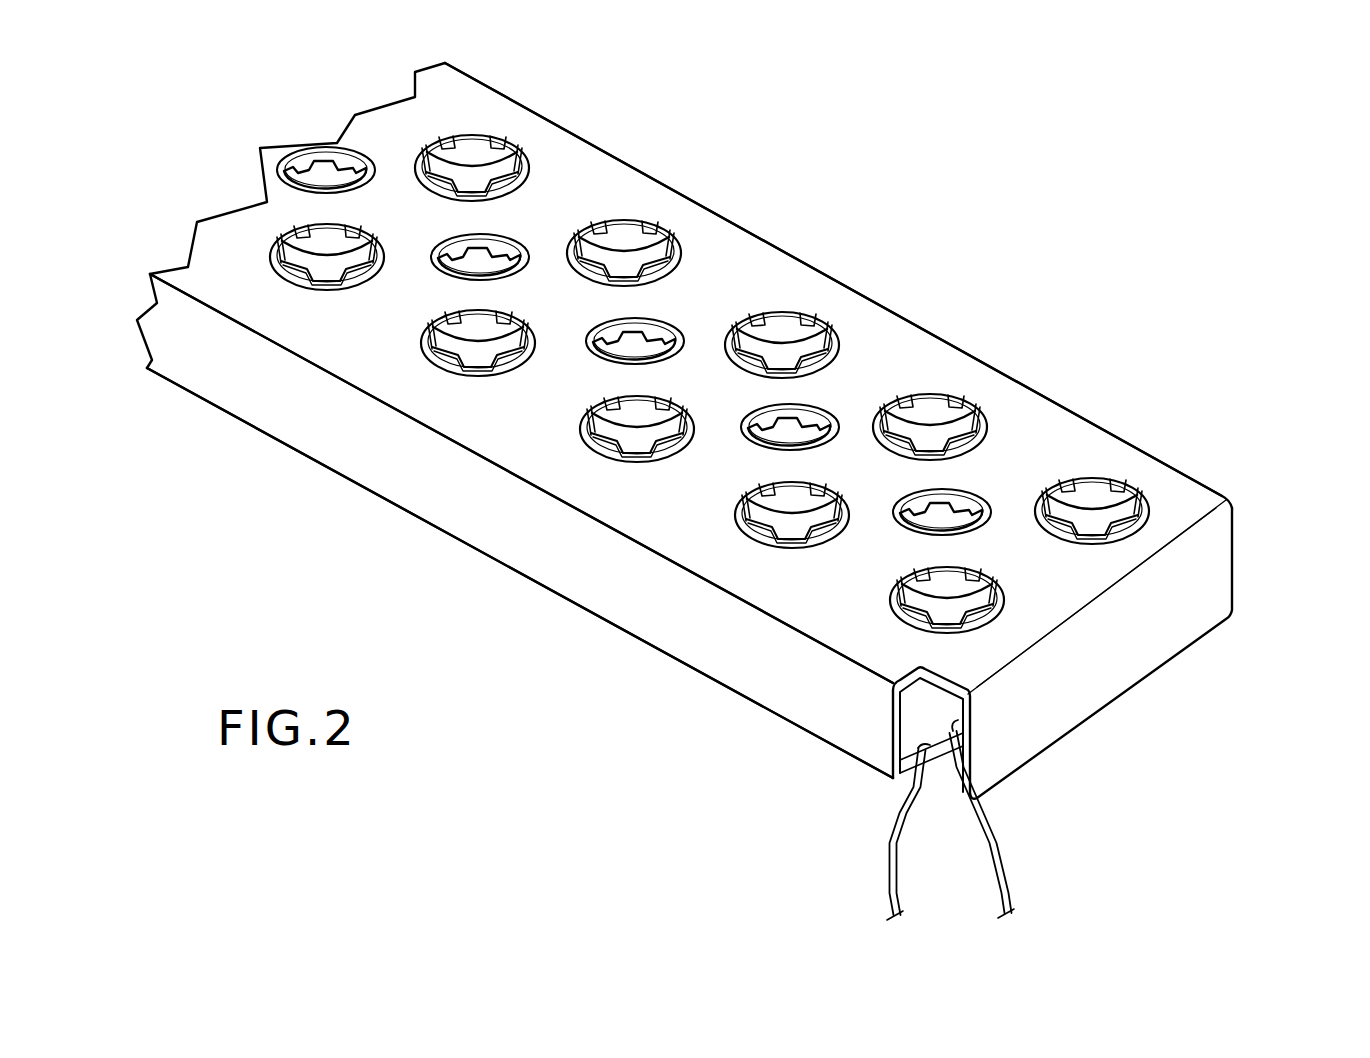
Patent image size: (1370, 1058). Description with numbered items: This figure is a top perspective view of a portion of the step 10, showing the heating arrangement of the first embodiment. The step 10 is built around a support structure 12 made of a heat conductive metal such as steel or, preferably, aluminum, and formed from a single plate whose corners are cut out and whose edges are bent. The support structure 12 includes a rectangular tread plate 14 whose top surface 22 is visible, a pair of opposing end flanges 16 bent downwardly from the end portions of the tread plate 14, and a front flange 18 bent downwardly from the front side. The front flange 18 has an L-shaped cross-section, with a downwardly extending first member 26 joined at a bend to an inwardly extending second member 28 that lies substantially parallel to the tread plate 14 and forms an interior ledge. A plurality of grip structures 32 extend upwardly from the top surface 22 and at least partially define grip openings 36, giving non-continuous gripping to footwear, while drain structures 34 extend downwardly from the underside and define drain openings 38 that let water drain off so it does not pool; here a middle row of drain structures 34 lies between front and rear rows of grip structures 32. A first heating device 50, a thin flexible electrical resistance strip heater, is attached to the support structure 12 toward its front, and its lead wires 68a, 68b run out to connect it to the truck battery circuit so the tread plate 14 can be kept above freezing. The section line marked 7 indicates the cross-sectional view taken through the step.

The step 10 is at (705, 178).
The support structure 12 is at (857, 292).
The tread plate 14 is at (895, 345).
The end flanges 16 is at (1030, 710).
The front flange 18 is at (707, 633).
The top surface 22 is at (760, 270).
The first member 26 is at (875, 728).
The second member 28 is at (912, 830).
The grip structures 32 is at (980, 400).
The drain structures 34 is at (973, 497).
The grip openings 36 is at (1093, 514).
The drain openings 38 is at (795, 437).
The first heating device 50 is at (925, 710).
The lead wire 68a is at (893, 880).
The lead wire 68b is at (1000, 870).
The section line 7- 7 is at (1358, 395).